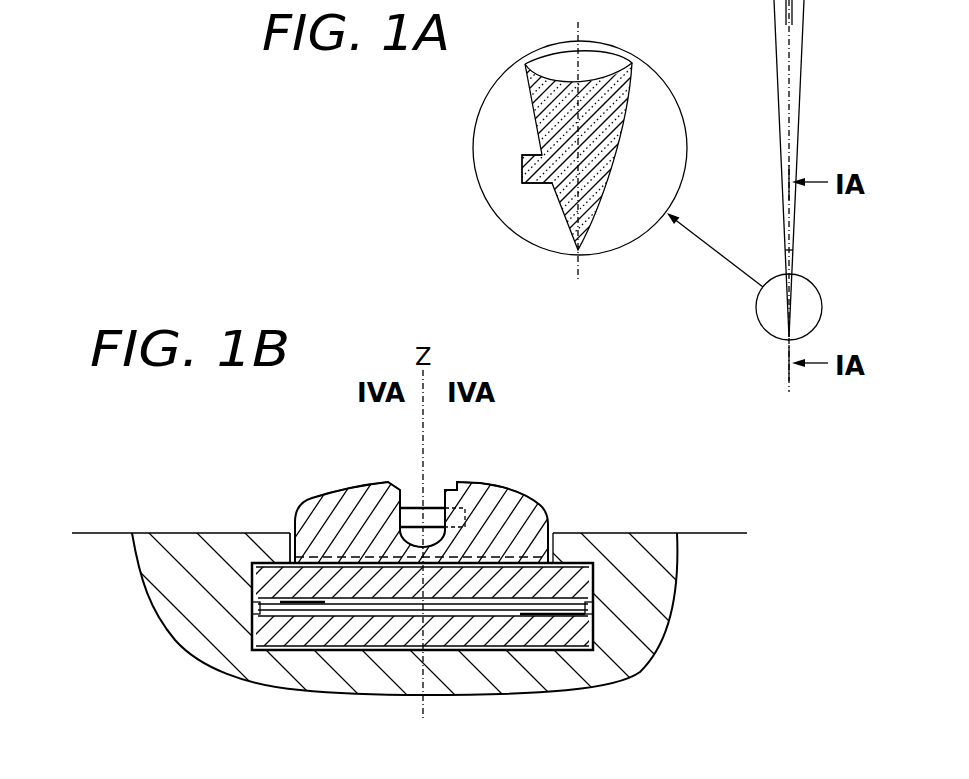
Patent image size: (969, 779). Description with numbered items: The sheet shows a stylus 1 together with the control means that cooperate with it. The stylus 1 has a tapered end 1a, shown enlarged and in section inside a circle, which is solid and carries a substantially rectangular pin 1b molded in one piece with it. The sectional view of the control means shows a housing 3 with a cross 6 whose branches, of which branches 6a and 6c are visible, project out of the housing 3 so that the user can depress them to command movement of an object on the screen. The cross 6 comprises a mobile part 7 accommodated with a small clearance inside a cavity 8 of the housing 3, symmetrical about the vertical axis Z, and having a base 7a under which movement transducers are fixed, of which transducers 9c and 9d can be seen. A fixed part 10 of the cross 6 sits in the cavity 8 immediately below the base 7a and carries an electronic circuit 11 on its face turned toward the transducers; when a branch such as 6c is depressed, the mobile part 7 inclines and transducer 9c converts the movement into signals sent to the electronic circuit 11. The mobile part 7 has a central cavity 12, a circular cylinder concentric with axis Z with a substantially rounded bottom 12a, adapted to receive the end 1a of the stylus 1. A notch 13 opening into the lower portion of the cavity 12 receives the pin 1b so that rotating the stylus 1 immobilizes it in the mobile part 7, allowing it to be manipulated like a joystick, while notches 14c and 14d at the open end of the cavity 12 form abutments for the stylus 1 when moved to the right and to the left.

In FIG. 1A, the stylus 1 is at (798, 68).
In FIG. 1A, the end of the stylus 1a is at (600, 167).
In FIG. 1A, the pin 1b is at (525, 158).
In FIG. 1B, the housing 3 is at (596, 672).
In FIG. 1B, the cross 6 is at (425, 486).
In FIG. 1B, the branch of the cross 6a is at (500, 498).
In FIG. 1B, the branch of the cross 6c is at (318, 527).
In FIG. 1B, the mobile part 7 is at (545, 500).
In FIG. 1B, the base 7a is at (270, 580).
In FIG. 1B, the cavity of the housing 8 is at (290, 525).
In FIG. 1B, the movement transducer 9c is at (252, 605).
In FIG. 1B, the movement transducer 9d is at (590, 609).
In FIG. 1B, the fixed part 10 is at (570, 635).
In FIG. 1B, the electronic circuit 11 is at (327, 612).
In FIG. 1B, the cavity 12 is at (415, 502).
In FIG. 1B, the bottom of the cavity 12a is at (555, 558).
In FIG. 1B, the notch 13 is at (462, 516).
In FIG. 1B, the notch 14c is at (388, 481).
In FIG. 1B, the notch 14d is at (457, 482).